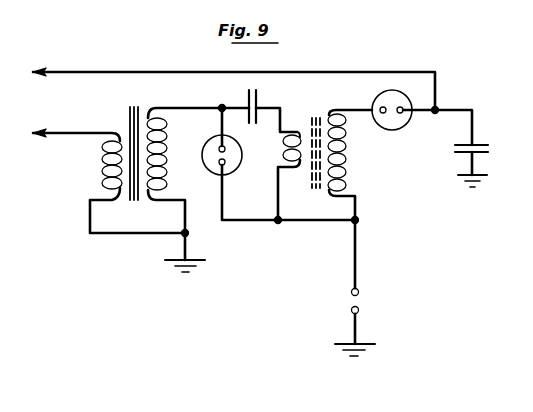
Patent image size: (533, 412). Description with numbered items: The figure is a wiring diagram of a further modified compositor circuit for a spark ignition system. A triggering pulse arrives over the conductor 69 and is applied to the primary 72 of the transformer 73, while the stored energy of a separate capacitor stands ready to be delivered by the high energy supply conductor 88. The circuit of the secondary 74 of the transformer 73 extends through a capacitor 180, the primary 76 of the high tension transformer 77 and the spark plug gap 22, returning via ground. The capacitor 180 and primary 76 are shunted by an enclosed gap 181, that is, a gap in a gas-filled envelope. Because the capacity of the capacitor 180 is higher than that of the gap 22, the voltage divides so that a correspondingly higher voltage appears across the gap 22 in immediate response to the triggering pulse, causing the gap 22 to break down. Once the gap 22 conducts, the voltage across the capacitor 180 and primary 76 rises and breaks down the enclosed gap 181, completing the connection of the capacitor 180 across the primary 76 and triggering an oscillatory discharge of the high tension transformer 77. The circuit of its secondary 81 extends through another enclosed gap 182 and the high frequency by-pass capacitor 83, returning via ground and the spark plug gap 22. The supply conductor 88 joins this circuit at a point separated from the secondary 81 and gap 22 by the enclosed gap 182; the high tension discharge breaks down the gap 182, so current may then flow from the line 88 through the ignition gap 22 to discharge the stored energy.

The high energy supply conductor 88 is at (90, 58).
The conductor 69 is at (78, 118).
The primary 72 is at (101, 158).
The transformer 73 is at (130, 104).
The secondary 74 is at (168, 131).
The enclosed gap 181 is at (199, 163).
The capacitor 180 is at (253, 88).
The primary 76 is at (288, 146).
The high tension transformer 77 is at (312, 190).
The secondary 81 is at (347, 163).
The enclosed gap 182 is at (391, 131).
The high frequency by-pass capacitor 83 is at (490, 148).
The spark plug gap 22 is at (358, 299).